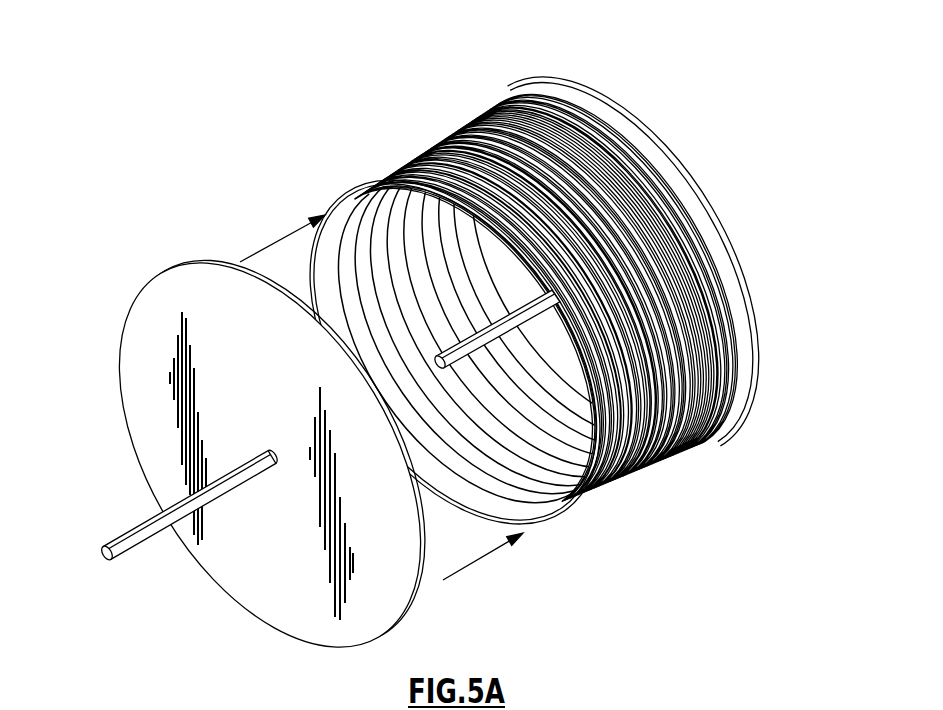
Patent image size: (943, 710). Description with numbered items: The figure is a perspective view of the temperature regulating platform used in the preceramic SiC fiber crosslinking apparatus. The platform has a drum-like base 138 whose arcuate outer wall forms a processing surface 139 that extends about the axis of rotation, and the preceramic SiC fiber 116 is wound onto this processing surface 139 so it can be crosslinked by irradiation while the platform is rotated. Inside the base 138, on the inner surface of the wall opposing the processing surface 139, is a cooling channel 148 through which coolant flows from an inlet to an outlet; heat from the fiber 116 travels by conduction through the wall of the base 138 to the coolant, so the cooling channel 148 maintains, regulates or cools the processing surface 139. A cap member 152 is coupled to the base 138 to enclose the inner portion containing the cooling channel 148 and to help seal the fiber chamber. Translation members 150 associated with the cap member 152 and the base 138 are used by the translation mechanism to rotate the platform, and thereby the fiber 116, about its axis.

The preceramic SiC fiber 116 is at (460, 168).
The base 138 is at (563, 78).
The processing surface 139 is at (557, 478).
The cooling channel 148 is at (520, 478).
The translation member 150 is at (478, 335).
The cap member 152 is at (123, 393).